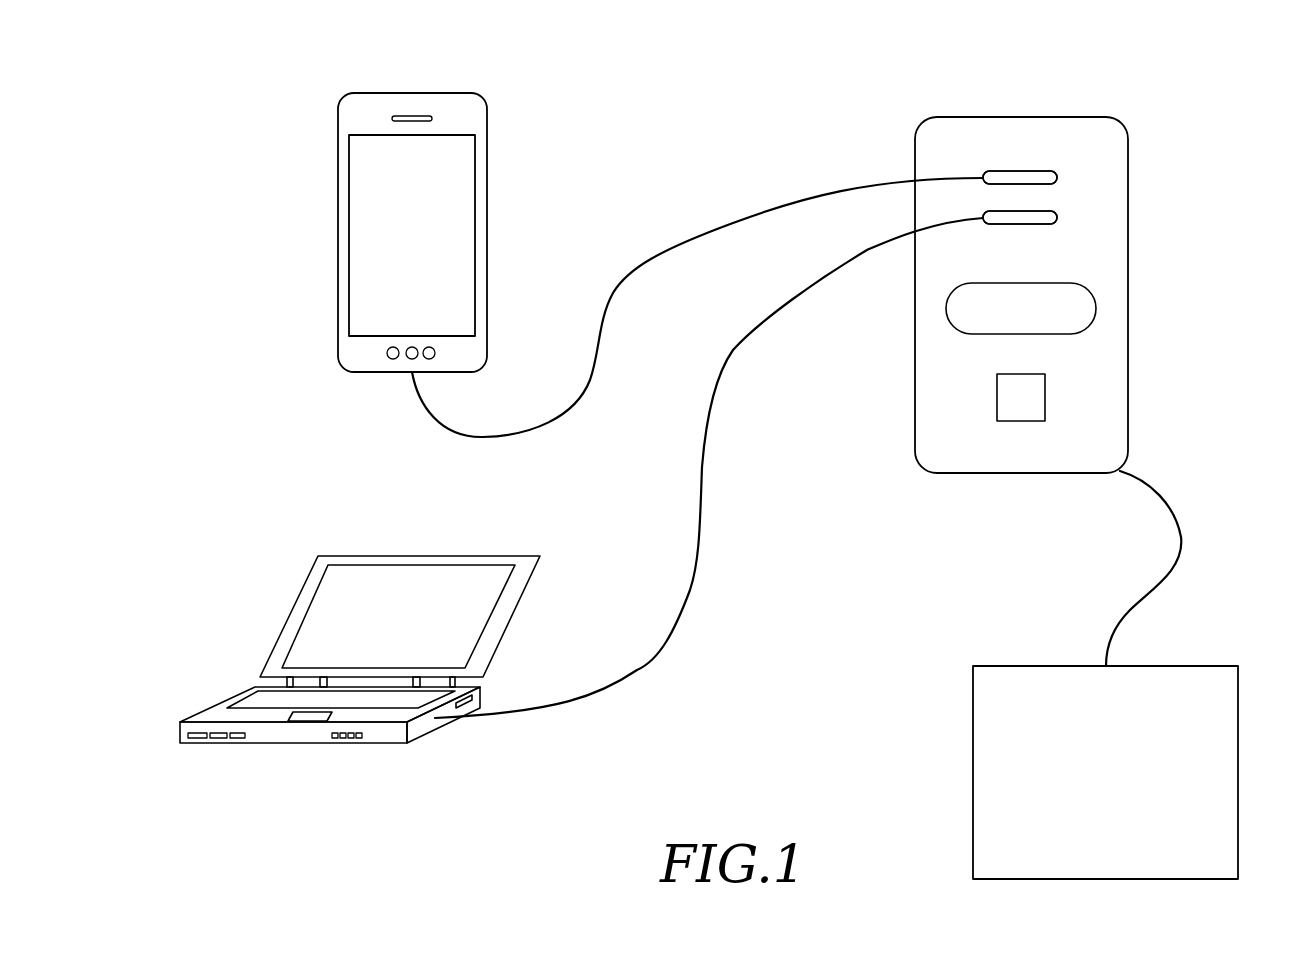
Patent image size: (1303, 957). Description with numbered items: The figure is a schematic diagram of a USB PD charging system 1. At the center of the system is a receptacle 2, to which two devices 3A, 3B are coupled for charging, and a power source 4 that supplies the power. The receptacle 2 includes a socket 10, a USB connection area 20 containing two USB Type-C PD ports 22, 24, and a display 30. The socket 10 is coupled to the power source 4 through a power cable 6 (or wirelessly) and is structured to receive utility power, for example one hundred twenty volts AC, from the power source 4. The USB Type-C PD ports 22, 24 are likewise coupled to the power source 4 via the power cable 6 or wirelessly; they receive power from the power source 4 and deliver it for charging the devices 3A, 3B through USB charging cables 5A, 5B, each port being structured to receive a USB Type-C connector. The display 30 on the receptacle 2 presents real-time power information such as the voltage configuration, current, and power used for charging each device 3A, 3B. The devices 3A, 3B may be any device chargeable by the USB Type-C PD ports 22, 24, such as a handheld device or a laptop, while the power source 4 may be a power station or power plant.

The USB PD charging system 1 is at (253, 131).
The receptacle 2 is at (990, 117).
The device 3A is at (338, 142).
The device 3B is at (298, 597).
The power source 4 is at (1238, 751).
The USB charging cable 5A is at (737, 222).
The USB charging cable 5B is at (697, 487).
The power cable 6 is at (1183, 538).
The socket 10 is at (1045, 398).
The USB connection area 20 is at (1080, 165).
The USB Type-C PD port 22 is at (1032, 171).
The USB Type-C PD port 24 is at (1045, 224).
The display 30 is at (1013, 283).